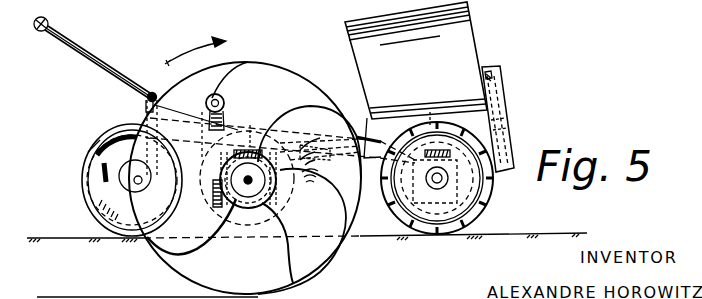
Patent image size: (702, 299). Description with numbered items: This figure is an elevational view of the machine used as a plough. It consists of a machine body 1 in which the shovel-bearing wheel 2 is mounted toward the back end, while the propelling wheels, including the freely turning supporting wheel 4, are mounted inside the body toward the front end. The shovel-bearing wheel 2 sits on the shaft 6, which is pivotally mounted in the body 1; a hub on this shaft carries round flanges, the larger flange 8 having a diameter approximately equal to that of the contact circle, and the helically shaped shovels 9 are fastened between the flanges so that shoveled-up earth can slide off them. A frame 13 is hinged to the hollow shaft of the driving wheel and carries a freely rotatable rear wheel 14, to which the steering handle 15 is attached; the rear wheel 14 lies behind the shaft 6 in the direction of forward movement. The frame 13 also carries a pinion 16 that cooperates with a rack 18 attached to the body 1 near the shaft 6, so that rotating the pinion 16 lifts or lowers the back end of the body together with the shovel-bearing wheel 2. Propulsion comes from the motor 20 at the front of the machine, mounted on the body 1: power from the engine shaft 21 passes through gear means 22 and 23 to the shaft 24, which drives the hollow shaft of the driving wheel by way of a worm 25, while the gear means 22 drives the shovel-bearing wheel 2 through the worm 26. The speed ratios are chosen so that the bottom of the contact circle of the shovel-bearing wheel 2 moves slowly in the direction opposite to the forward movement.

The machine body 1 is at (369, 198).
The shovel-bearing wheel 2 is at (345, 250).
The supporting wheel 4 is at (488, 196).
The shaft 6 is at (248, 184).
The flange 8 is at (293, 212).
The shovels 9 is at (228, 73).
The frame 13 is at (328, 138).
The rear wheel 14 is at (88, 205).
The steering handle 15 is at (38, 33).
The pinion 16 is at (206, 101).
The rack 18 is at (236, 179).
The motor 20 is at (462, 28).
The engine shaft 21 is at (477, 66).
The gear means 22 is at (501, 80).
The gear means 23 is at (503, 113).
The shaft 24 is at (511, 141).
The worm 25 is at (437, 112).
The worm 26 is at (250, 131).